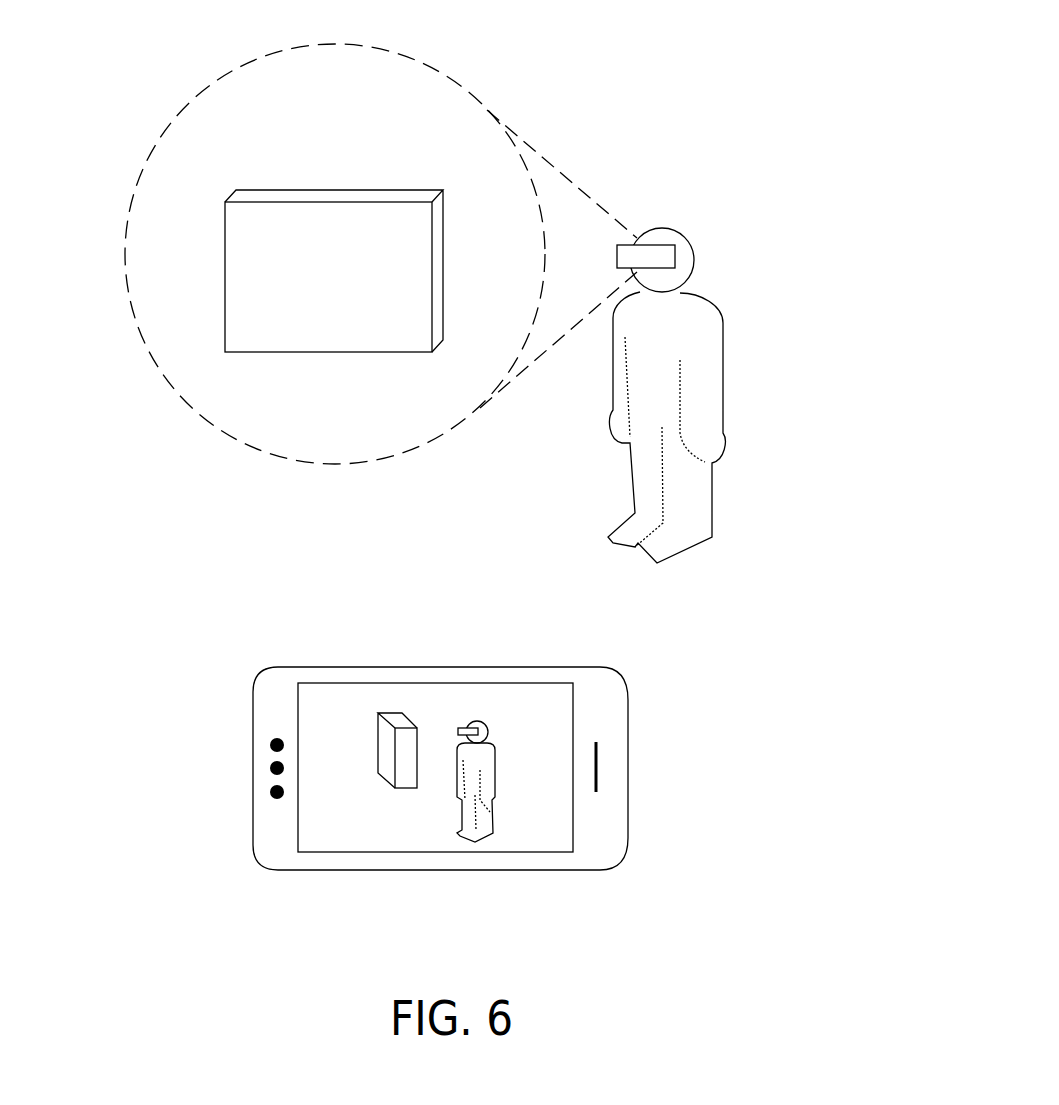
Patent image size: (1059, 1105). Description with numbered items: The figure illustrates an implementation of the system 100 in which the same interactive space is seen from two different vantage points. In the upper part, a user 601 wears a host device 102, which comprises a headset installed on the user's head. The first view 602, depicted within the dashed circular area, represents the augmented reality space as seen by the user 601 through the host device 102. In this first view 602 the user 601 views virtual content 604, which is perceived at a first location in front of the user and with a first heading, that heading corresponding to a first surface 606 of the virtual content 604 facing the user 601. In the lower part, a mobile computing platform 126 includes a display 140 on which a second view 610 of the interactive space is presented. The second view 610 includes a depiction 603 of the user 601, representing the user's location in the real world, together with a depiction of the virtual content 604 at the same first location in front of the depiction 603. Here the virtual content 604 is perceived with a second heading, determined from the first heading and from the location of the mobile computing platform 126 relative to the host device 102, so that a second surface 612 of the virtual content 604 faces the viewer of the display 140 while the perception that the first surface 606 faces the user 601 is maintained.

The system 100 is at (619, 96).
The host device 102 is at (675, 250).
The mobile computing platform 126 is at (632, 752).
The display 140 is at (532, 707).
The user 601 is at (713, 357).
The first view 602 is at (280, 436).
The depiction of user 603 is at (490, 765).
The virtual content 604 is at (334, 439).
The first surface 606 is at (309, 279).
The second view 610 is at (344, 834).
The second surface 612 is at (407, 755).